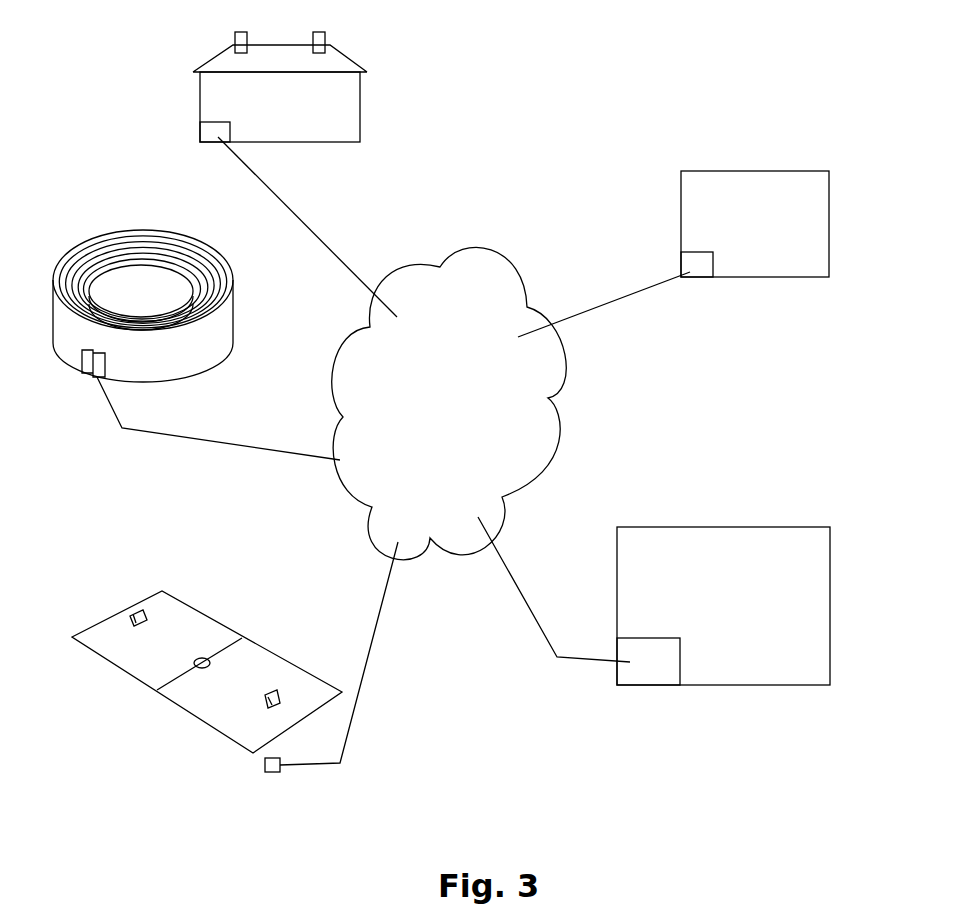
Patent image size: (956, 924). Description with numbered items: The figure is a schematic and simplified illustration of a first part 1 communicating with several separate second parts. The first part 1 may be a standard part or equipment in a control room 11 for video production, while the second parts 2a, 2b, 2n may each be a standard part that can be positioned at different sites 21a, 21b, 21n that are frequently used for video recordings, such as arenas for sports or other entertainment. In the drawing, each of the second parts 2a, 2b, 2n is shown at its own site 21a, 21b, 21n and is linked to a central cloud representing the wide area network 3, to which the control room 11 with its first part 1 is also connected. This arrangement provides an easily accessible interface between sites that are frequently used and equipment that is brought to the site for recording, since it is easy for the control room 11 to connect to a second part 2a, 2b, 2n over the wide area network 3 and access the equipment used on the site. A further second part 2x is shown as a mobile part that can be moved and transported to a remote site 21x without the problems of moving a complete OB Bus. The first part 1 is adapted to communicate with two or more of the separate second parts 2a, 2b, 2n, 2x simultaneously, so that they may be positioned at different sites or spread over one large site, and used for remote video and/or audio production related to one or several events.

The first part 1 is at (652, 665).
The control room 11 is at (757, 553).
The second part 2a is at (83, 370).
The second part 2b is at (210, 137).
The second part 2n is at (688, 262).
The mobile second part 2x is at (268, 772).
The site 21a is at (140, 290).
The site 21b is at (320, 107).
The site 21n is at (773, 203).
The remote site 21x is at (162, 717).
The wide area network 3 is at (447, 530).